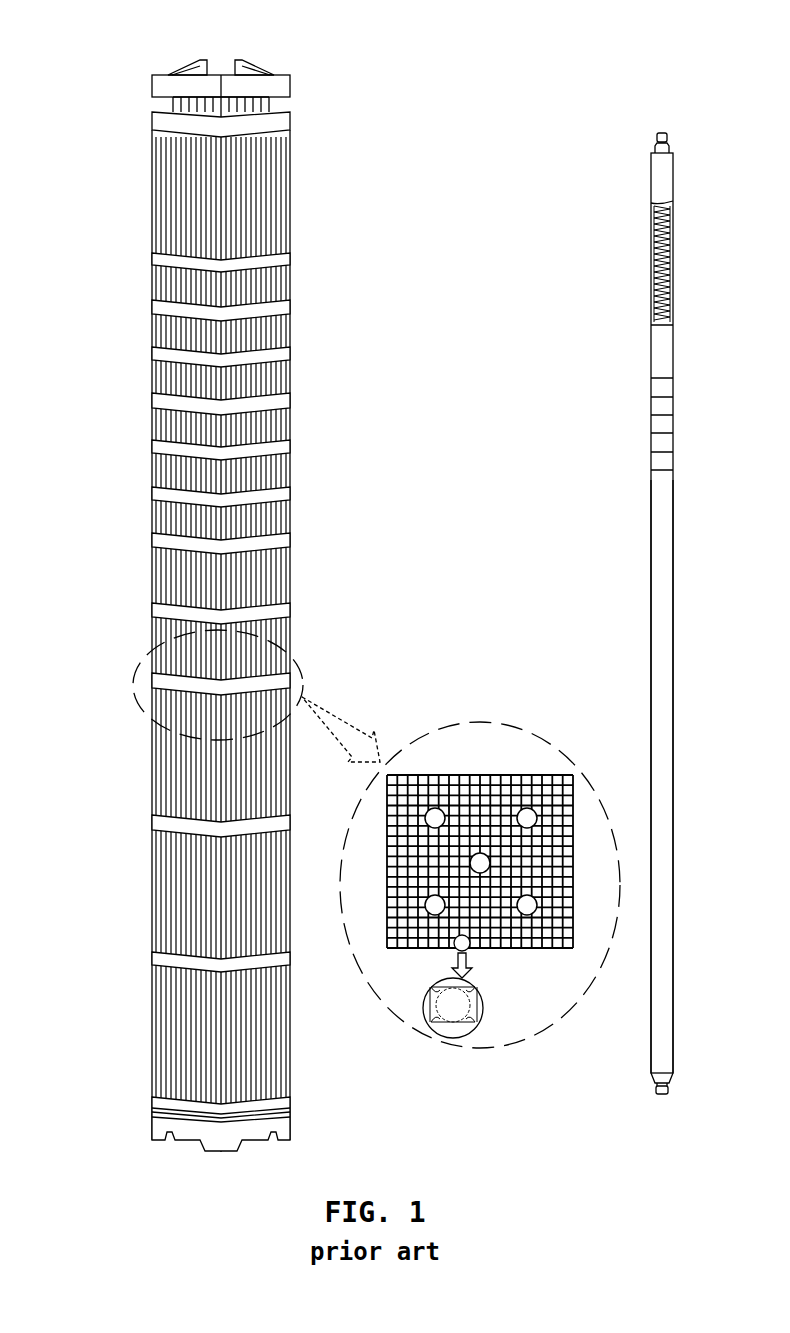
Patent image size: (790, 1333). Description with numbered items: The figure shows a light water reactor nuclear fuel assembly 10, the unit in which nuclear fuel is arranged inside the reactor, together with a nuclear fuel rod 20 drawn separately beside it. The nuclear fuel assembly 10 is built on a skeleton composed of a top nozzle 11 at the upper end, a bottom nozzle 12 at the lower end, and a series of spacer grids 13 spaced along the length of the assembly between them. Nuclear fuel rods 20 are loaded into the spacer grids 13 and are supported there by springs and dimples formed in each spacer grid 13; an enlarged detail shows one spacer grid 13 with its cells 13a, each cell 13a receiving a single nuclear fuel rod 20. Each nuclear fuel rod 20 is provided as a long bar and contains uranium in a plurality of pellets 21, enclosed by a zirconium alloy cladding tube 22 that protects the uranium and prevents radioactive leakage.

The nuclear fuel assembly 10 is at (312, 140).
The top nozzle 11 is at (152, 88).
The bottom nozzle 12 is at (160, 1122).
The spacer grid 13 is at (158, 608).
The cell 13a is at (417, 776).
The nuclear fuel rod 20 is at (628, 365).
The pellet 21 is at (652, 423).
The zirconium alloy cladding tube 22 is at (652, 578).